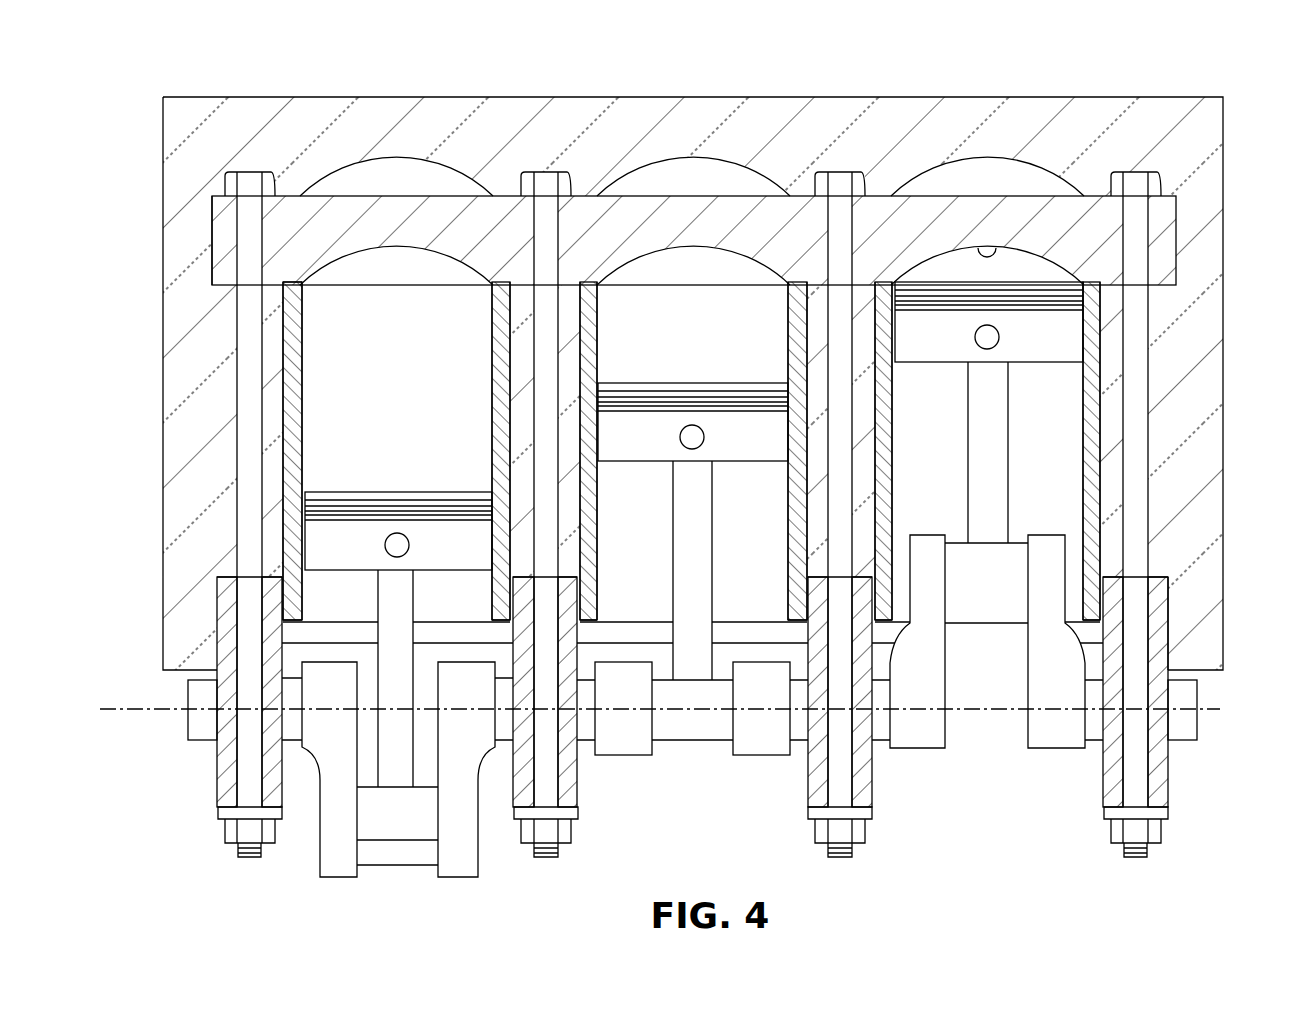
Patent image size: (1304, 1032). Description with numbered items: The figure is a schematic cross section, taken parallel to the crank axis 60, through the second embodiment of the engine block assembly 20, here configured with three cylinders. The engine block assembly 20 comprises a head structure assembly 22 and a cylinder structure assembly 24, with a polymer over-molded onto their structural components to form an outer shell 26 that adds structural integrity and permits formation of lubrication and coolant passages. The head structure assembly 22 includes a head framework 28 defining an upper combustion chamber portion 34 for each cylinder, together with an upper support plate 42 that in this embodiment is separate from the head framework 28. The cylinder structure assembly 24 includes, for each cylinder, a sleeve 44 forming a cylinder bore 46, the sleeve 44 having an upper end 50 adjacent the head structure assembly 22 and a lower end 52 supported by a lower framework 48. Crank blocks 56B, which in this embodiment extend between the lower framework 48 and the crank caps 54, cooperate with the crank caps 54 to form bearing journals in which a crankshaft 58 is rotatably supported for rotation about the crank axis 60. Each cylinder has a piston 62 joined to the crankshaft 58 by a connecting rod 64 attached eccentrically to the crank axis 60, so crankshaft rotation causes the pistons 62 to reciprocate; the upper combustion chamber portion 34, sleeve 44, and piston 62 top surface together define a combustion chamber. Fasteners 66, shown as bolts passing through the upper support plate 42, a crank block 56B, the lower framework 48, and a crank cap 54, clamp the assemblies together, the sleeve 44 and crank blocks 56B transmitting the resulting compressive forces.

The engine block assembly 20 is at (1035, 66).
The head structure assembly 22 is at (1178, 258).
The cylinder structure assembly 24 is at (1158, 441).
The outer shell 26 is at (490, 96).
The head framework 28 is at (395, 155).
The upper combustion chamber portion 34 is at (392, 245).
The upper support plate 42 is at (215, 222).
The sleeve 44 is at (292, 445).
The cylinder bore 46 is at (305, 330).
The lower framework 48 is at (215, 622).
The upper end 50 is at (293, 282).
The lower end 52 is at (298, 655).
The crank cap 54 is at (225, 790).
The crank block 56B is at (237, 655).
The crankshaft 58 is at (190, 720).
The crank axis 60 is at (125, 708).
The piston 62 is at (432, 530).
The connecting rod 64 is at (385, 580).
The fastener 66 is at (548, 232).